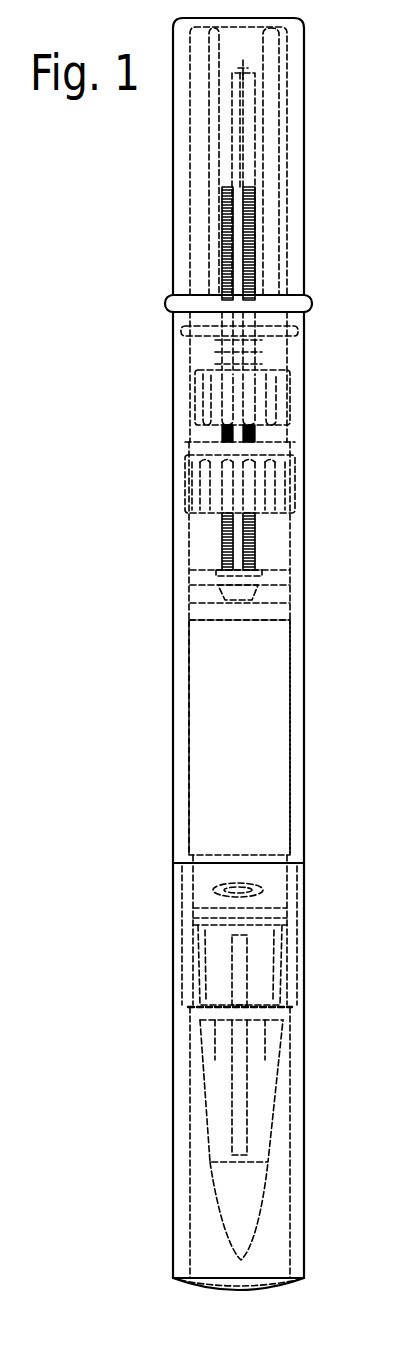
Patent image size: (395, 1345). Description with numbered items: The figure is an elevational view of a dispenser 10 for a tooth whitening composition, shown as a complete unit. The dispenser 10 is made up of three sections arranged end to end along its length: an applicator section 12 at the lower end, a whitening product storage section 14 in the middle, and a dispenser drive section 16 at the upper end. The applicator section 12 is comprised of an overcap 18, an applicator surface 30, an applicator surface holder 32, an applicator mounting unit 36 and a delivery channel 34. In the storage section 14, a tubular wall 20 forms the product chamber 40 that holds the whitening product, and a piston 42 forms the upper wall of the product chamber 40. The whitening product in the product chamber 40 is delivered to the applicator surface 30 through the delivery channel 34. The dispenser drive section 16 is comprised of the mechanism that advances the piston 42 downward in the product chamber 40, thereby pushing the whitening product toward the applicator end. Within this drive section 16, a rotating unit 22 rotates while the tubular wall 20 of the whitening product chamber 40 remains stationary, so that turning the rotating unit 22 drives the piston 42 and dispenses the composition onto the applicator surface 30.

The dispenser 10 is at (173, 715).
The applicator section 12 is at (338, 871).
The whitening product storage section 14 is at (338, 457).
The dispenser drive section 16 is at (338, 17).
The overcap 18 is at (173, 1223).
The tubular wall 20 is at (173, 678).
The rotating unit 22 is at (173, 175).
The applicator surface 30 is at (232, 1203).
The applicator surface holder 32 is at (197, 1053).
The delivery channel 34 is at (232, 1128).
The applicator mounting unit 36 is at (217, 950).
The product chamber 40 is at (227, 750).
The piston 42 is at (189, 593).